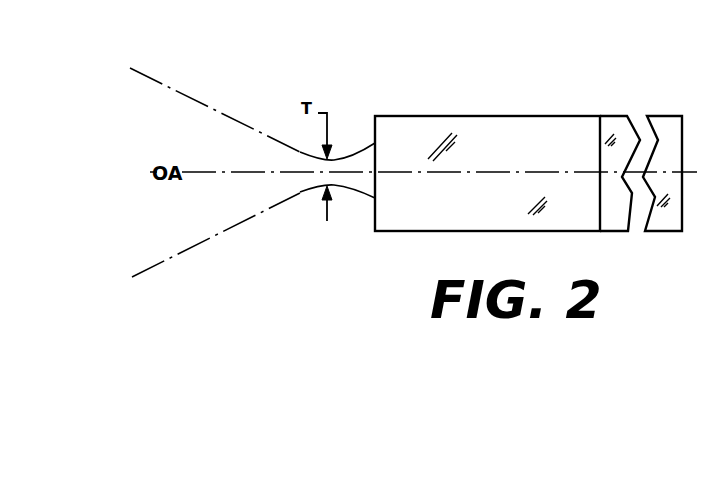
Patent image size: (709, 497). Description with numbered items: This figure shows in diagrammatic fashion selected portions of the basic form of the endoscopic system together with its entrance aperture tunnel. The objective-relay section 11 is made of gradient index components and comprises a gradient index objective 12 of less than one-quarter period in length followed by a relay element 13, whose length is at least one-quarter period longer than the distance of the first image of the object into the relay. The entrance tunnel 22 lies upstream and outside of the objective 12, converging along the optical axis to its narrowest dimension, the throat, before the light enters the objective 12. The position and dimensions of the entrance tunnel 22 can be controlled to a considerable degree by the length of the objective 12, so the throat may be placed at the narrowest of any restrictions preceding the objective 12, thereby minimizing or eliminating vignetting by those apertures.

The objective-relay section 11 is at (528, 131).
The gradient index objective 12 is at (522, 116).
The relay element 13 is at (601, 159).
The entrance tunnel 22 is at (208, 107).